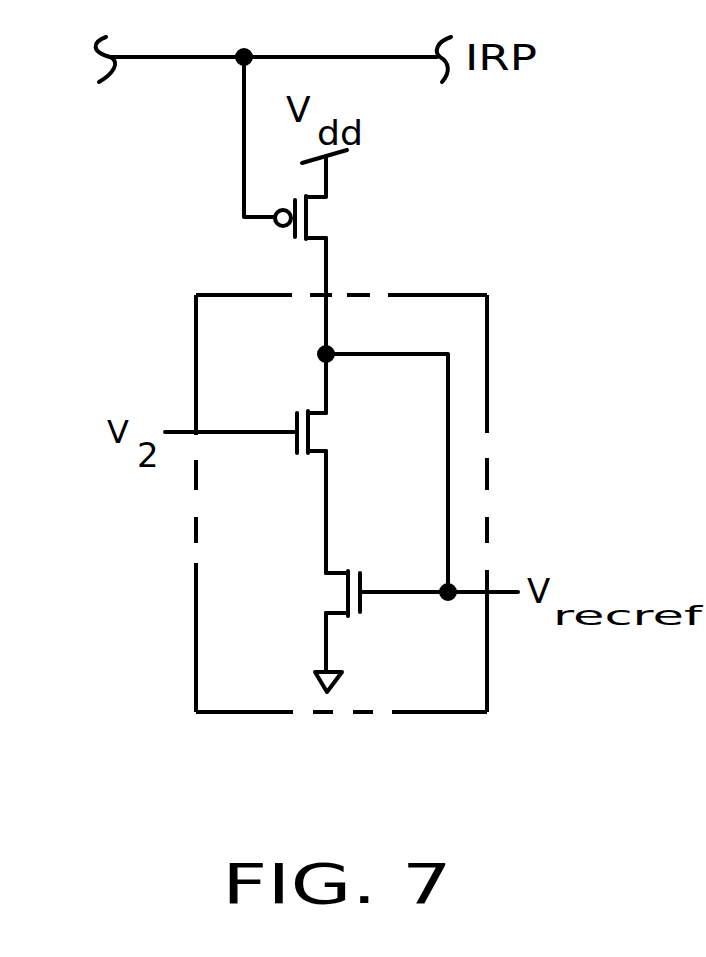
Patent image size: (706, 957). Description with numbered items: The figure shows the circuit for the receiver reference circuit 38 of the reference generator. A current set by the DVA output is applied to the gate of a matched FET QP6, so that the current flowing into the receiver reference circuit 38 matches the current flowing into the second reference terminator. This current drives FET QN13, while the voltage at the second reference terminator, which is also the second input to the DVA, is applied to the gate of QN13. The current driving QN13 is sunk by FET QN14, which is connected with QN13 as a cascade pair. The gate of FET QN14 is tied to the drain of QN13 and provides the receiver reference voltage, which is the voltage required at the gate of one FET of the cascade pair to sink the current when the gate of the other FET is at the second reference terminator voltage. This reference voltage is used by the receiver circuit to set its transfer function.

The receiver reference circuit 38 is at (487, 295).
The matched FET QP6 is at (349, 204).
The FET QN13 is at (367, 435).
The FET QN14 is at (287, 595).